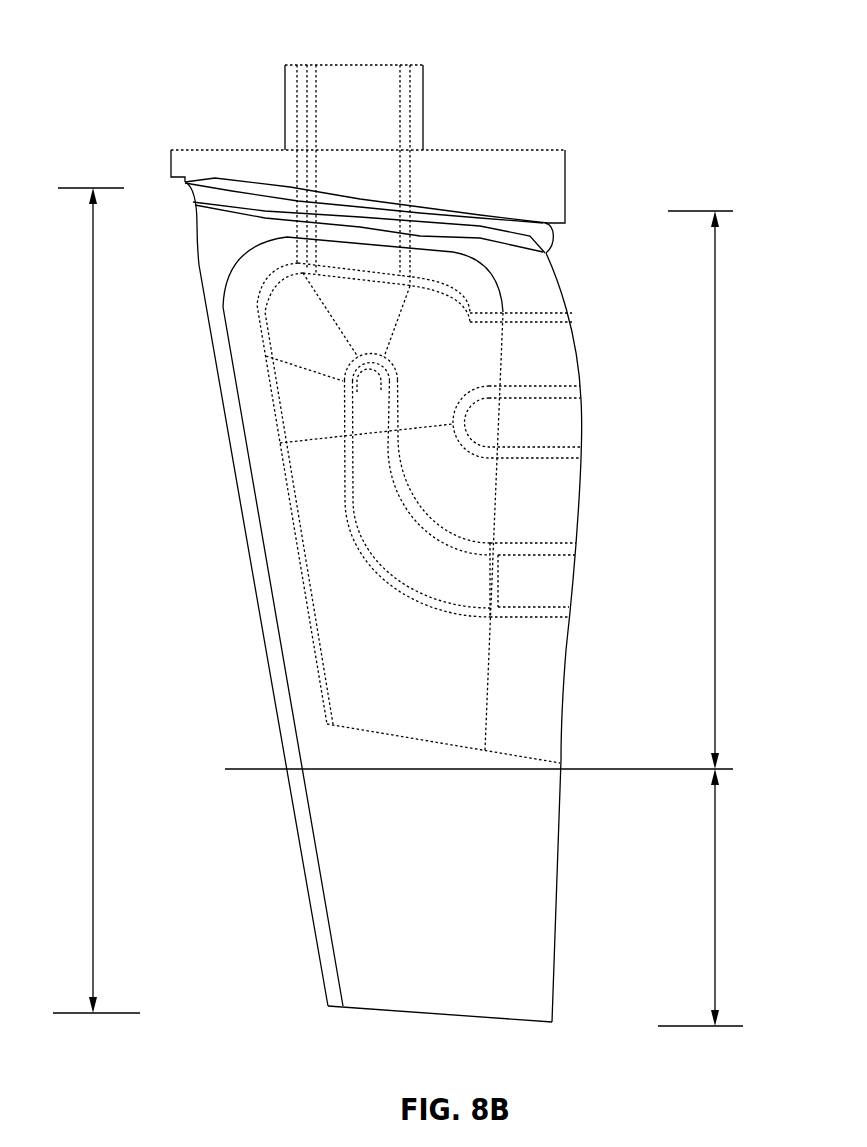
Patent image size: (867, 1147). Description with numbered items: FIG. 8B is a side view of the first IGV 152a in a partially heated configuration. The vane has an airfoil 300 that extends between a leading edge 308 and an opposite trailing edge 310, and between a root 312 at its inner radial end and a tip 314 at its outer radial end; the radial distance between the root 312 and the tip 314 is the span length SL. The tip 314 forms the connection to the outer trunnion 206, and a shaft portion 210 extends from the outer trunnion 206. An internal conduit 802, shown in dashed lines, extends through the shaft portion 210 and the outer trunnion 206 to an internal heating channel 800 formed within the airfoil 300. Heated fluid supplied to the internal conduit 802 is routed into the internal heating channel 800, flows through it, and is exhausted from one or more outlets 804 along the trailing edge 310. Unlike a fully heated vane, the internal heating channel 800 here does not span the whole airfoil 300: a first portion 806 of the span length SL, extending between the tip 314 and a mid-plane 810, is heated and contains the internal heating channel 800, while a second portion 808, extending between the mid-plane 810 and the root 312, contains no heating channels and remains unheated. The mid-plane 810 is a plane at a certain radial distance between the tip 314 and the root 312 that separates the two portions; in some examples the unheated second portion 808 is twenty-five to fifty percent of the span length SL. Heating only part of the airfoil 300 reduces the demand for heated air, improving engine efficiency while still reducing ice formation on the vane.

The first IGV 152a is at (236, 48).
The shaft portion 210 is at (293, 89).
The internal conduit 802 is at (404, 121).
The outer trunnion 206 is at (178, 163).
The tip 314 is at (238, 186).
The airfoil 300 is at (225, 243).
The leading edge 308 is at (225, 410).
The trailing edge 310 is at (560, 298).
The root 312 is at (370, 1013).
The internal heating channel 800 is at (335, 577).
The outlets 804 is at (584, 336).
The first portion 806 is at (713, 490).
The second portion 808 is at (713, 897).
The mid-plane 810 is at (458, 772).
The span length SL is at (92, 600).